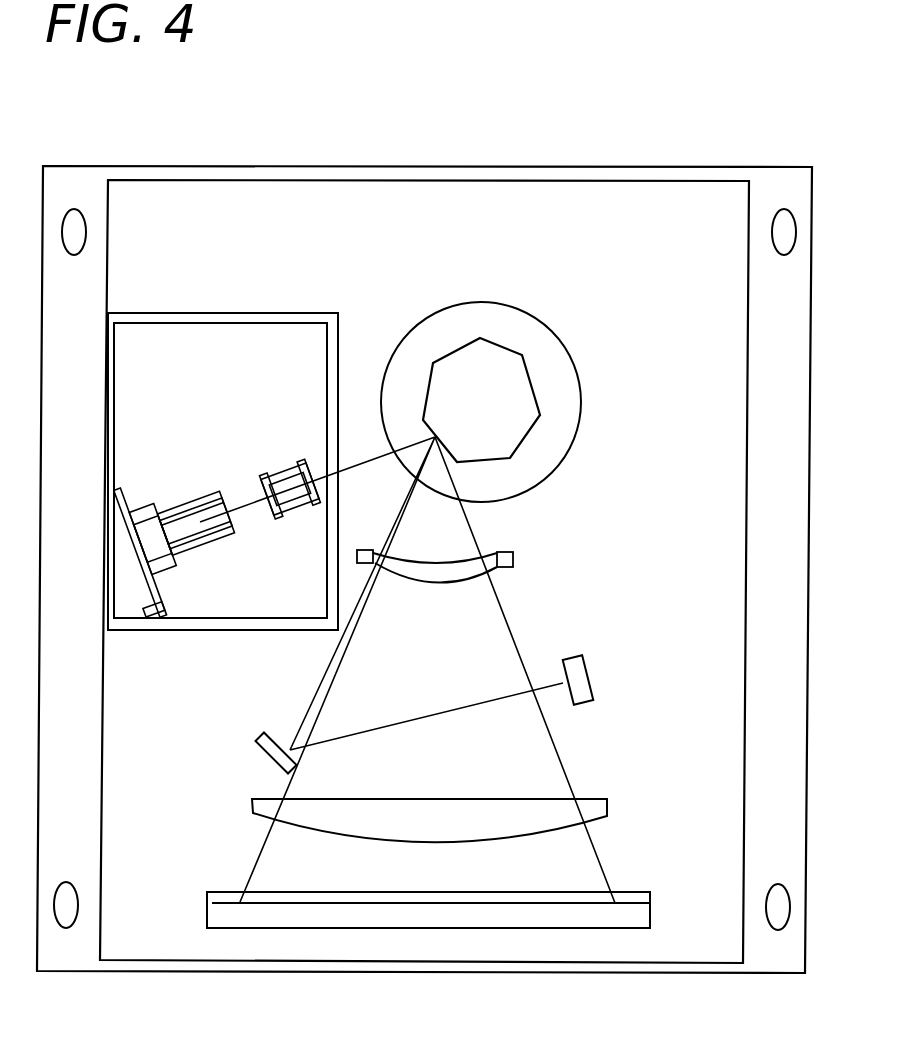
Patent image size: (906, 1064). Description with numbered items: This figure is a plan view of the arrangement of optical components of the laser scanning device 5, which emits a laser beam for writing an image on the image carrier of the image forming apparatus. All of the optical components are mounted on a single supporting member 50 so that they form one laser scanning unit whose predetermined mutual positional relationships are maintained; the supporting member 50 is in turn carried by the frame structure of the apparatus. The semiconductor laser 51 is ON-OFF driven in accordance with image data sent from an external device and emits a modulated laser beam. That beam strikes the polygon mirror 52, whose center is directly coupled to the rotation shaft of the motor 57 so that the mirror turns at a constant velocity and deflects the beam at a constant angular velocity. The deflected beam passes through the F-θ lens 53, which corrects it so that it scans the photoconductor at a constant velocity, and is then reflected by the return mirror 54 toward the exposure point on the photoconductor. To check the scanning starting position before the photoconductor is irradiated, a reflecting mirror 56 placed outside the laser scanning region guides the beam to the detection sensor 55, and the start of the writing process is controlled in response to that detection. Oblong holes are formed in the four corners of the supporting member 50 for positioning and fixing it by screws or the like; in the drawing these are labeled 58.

The laser scanning device 5 is at (576, 160).
The supporting member 50 is at (332, 166).
The semiconductor laser 51 is at (168, 510).
The polygon mirror 52 is at (514, 356).
The F-θ lens 53 is at (605, 798).
The return mirror 54 is at (638, 900).
The detection sensor 55 is at (577, 656).
The reflecting mirror 56 is at (262, 736).
The motor 57 is at (440, 305).
The mounting hole 58 is at (782, 222).